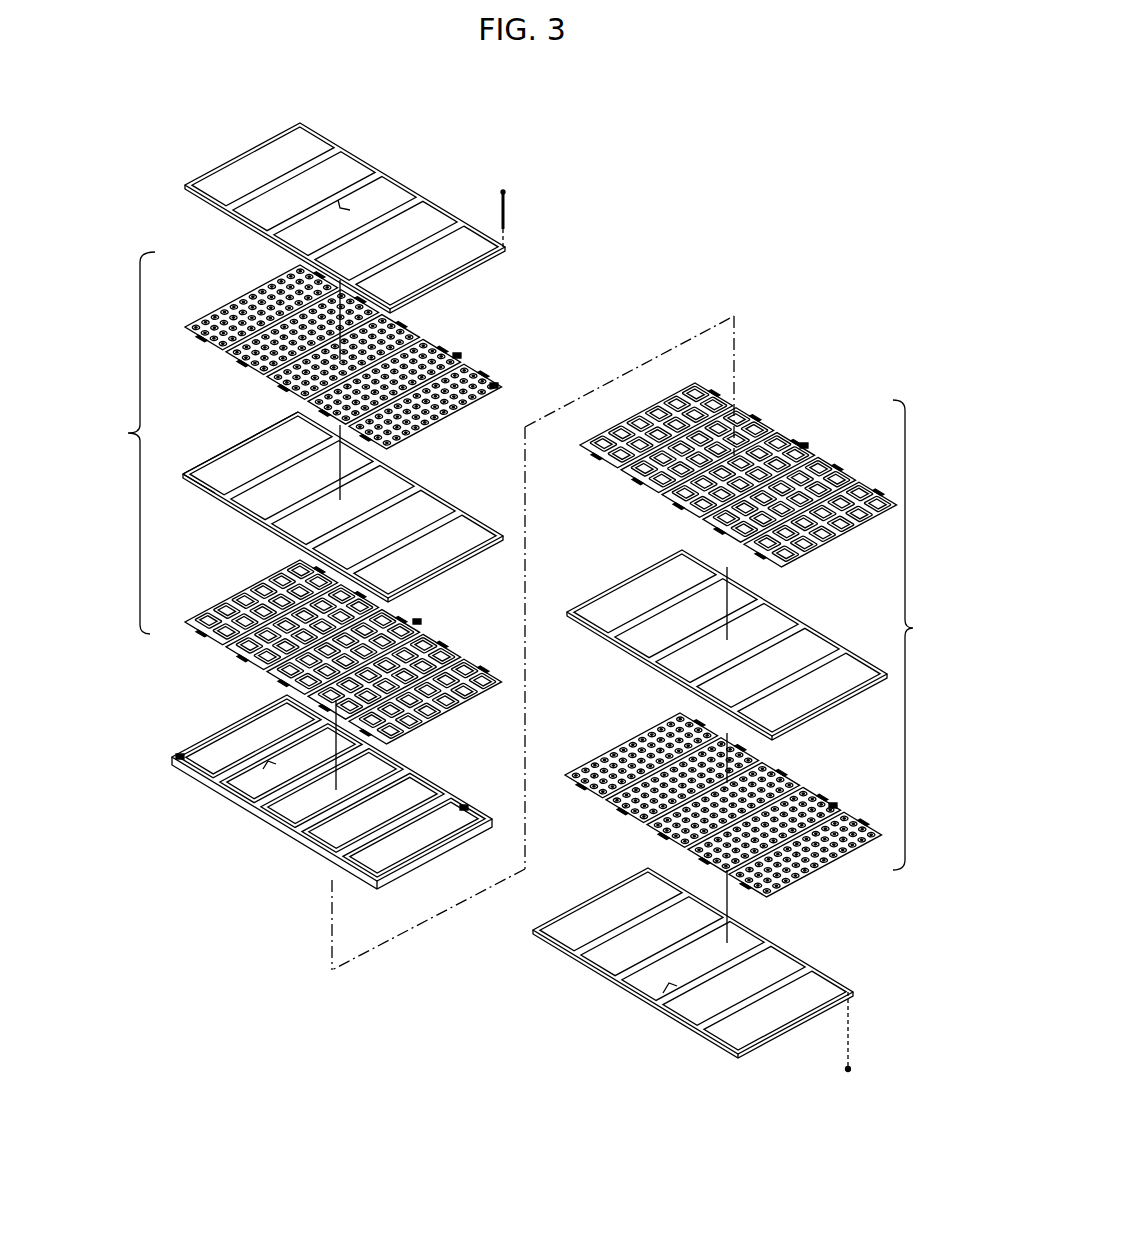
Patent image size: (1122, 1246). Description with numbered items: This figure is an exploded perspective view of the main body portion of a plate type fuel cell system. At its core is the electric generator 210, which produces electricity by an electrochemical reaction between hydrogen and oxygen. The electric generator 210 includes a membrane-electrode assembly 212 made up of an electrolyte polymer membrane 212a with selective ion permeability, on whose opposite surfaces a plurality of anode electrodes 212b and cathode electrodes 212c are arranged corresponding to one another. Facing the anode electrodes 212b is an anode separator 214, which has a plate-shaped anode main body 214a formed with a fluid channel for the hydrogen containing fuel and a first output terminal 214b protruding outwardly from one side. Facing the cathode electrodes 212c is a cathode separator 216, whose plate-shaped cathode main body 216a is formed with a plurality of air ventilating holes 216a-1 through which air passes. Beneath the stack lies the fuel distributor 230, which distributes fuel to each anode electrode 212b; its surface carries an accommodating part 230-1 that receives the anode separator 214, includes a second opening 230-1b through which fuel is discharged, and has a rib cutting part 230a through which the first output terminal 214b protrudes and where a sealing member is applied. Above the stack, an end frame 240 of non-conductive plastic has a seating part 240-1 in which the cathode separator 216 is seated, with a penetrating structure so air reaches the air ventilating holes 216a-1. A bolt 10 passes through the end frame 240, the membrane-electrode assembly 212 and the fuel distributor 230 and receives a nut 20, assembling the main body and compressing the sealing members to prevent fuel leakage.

The end frame 240 is at (379, 194).
The seating part 240-1 is at (340, 196).
The bolt 10 is at (510, 194).
The cathode separator 216 is at (377, 348).
The cathode main body 216a is at (258, 293).
The air ventilating hole 216a-1 is at (495, 384).
The membrane-electrode assembly 212 is at (333, 492).
The electrolyte polymer membrane 212a is at (258, 433).
The anode electrode 212b is at (458, 354).
The cathode electrode 212c is at (207, 475).
The anode separator 214 is at (340, 641).
The anode main body 214a is at (460, 655).
The first output terminal 214b is at (418, 621).
The electric generator 210 is at (520, 561).
The fuel distributor 230 is at (299, 783).
The accommodating part 230-1 is at (263, 769).
The second opening 230-1b is at (178, 757).
The rib cutting part 230a is at (464, 808).
The nut 20 is at (846, 1069).